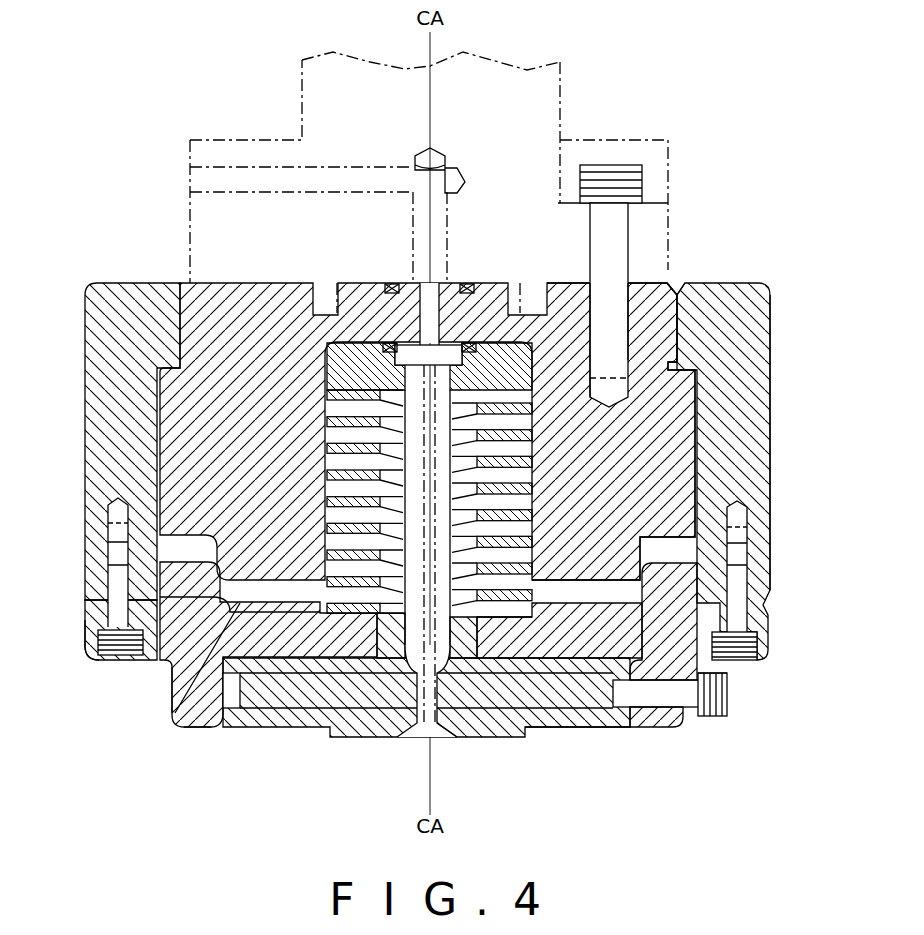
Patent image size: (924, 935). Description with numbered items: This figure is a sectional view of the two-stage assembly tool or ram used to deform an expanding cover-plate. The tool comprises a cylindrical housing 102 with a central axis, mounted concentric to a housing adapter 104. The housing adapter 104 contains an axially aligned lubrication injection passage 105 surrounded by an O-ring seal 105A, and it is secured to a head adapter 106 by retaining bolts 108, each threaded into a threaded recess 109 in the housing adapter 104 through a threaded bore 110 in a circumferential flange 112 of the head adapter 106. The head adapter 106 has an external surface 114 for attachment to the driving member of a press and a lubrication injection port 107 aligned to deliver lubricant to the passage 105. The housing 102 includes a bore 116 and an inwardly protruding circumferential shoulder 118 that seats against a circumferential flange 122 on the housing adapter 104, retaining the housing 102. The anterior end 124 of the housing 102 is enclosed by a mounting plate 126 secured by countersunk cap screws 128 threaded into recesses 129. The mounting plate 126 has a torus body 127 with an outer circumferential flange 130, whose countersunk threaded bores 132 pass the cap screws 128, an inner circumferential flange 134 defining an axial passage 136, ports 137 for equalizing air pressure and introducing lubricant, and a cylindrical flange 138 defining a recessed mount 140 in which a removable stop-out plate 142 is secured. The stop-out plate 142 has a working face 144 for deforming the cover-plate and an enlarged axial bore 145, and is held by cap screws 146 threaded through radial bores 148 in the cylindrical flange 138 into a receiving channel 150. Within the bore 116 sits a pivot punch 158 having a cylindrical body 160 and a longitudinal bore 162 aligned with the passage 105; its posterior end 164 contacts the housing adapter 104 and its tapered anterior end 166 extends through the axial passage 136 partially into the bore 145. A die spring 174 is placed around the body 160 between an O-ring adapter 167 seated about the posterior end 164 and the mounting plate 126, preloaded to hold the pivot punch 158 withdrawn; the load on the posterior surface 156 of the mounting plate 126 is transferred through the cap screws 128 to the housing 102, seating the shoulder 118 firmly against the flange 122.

The cylindrical housing 102 is at (780, 519).
The housing adapter 104 is at (697, 370).
The lubrication injection passage 105 is at (443, 281).
The O-ring seal 105A is at (386, 272).
The head adapter 106 is at (176, 138).
The lubrication injection port 107 is at (480, 182).
The retaining bolt 108 is at (650, 160).
The threaded recess 109 is at (680, 300).
The threaded bore 110 is at (630, 237).
The circumferential flange 112 is at (188, 222).
The external surface 114 is at (565, 62).
The bore 116 is at (87, 562).
The circumferential shoulder 118 is at (155, 352).
The circumferential flange 122 is at (162, 403).
The anterior end 124 is at (88, 598).
The mounting plate 126 is at (180, 712).
The torus body 127 is at (200, 729).
The countersunk cap screw 128 is at (113, 657).
The recess 129 is at (83, 533).
The outer circumferential flange 130 is at (776, 614).
The countersunk threaded bore 132 is at (760, 662).
The inner circumferential flange 134 is at (673, 633).
The axial passage 136 is at (344, 676).
The port 137 is at (185, 685).
The cylindrical flange 138 is at (714, 718).
The recessed mount 140 is at (293, 646).
The stop-out plate 142 is at (589, 738).
The working face 144 is at (472, 740).
The enlarged axial bore 145 is at (404, 737).
The cap screw 146 is at (737, 723).
The radial bore 148 is at (690, 728).
The receiving channel 150 is at (230, 710).
The posterior surface 156 is at (500, 618).
The pivot punch 158 is at (465, 498).
The cylindrical body 160 is at (442, 538).
The longitudinal bore 162 is at (433, 487).
The posterior end 164 is at (392, 343).
The anterior end 166 is at (438, 730).
The O-ring adapter 167 is at (592, 308).
The die spring 174 is at (355, 447).